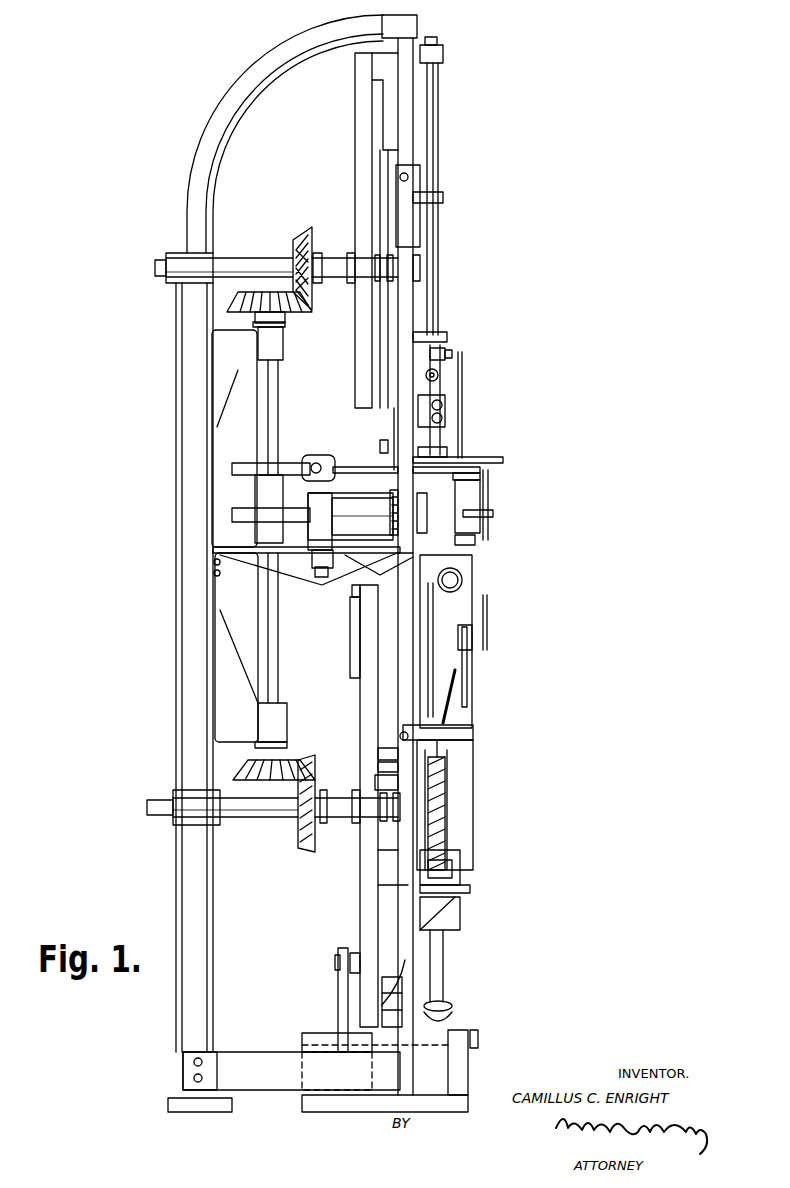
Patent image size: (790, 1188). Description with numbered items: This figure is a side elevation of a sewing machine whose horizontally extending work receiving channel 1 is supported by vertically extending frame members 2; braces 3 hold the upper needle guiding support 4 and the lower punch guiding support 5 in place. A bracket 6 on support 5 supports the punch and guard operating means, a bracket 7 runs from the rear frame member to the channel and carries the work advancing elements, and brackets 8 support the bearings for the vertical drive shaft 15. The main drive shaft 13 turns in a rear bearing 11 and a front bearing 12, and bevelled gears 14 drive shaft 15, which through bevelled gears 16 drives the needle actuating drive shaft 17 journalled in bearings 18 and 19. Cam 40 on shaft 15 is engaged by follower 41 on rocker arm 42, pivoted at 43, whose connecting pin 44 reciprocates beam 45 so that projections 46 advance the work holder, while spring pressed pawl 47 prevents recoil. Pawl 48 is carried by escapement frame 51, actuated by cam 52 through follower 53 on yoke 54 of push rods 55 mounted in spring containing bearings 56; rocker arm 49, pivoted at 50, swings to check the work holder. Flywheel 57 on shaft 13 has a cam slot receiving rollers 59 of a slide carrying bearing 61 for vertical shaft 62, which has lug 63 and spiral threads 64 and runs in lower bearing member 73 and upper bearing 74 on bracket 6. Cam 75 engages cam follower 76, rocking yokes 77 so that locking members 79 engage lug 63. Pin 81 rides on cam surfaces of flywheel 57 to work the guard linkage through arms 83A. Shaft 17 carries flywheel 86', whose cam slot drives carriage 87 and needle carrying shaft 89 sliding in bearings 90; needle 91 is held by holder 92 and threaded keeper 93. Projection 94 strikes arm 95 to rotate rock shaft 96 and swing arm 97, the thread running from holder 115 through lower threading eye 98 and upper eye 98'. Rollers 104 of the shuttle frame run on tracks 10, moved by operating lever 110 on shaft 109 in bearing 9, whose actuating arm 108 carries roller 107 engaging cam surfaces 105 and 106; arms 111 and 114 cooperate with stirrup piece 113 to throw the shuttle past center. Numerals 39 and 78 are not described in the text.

The work receiving channel 1 is at (398, 568).
The vertically extending frame members 2 is at (192, 505).
The braces 3 is at (420, 22).
The upper needle guiding support 4 is at (405, 132).
The punch guiding support 5 is at (405, 886).
The bracket 6 is at (460, 798).
The bracket 7 is at (302, 560).
The brackets 8 is at (236, 372).
The bearing 9 is at (462, 1070).
The tracks 10 is at (476, 570).
The rear bearing 11 is at (192, 808).
The front bearing 12 is at (380, 852).
The main drive shaft 13 is at (162, 800).
The bevelled gears 14 is at (318, 768).
The vertical drive shaft 15 is at (272, 388).
The bevelled gears 16 is at (300, 240).
The needle actuating drive shaft 17 is at (252, 266).
The bearing 18 is at (180, 258).
The bearing 19 is at (415, 250).
The bracket 39 is at (385, 573).
The cam 40 is at (243, 514).
The follower 41 is at (222, 562).
The rocker arm 42 is at (292, 484).
The pivot 43 is at (320, 575).
The connecting pin 44 is at (378, 498).
The reciprocating beam 45 is at (380, 518).
The projections 46 is at (404, 500).
The spring pressed pawl 47 is at (422, 508).
The pawl 48 is at (470, 546).
The rocker arm 49 is at (494, 513).
The pivot 50 is at (483, 498).
The escapement frame 51 is at (487, 480).
The cam 52 is at (243, 466).
The follower 53 is at (318, 462).
The yoke 54 is at (325, 470).
The push rods 55 is at (335, 466).
The bearings 56 is at (462, 446).
The flywheel 57 is at (372, 904).
The rollers 59 is at (407, 985).
The bearing 61 is at (450, 1010).
The vertical shaft 62 is at (440, 975).
The lug 63 is at (465, 878).
The spiral slots or threads 64 is at (448, 846).
The lower bearing member 73 is at (470, 893).
The upper bearing 74 is at (463, 741).
The cam 75 is at (385, 790).
The cam follower 76 is at (385, 770).
The yokes 77 is at (458, 763).
The bracket 78 is at (460, 911).
The locking members 79 is at (450, 821).
The pin 81 is at (390, 752).
The arms 83A is at (395, 718).
The flywheel 86' is at (351, 279).
The carriage 87 is at (445, 50).
The needle carrying shaft 89 is at (438, 86).
The bearings 90 is at (445, 197).
The needle 91 is at (440, 432).
The holder 92 is at (444, 350).
The threaded keeper 93 is at (453, 352).
The projection 94 is at (371, 116).
The arm 95 is at (378, 438).
The rock shaft 96 is at (398, 445).
The arm 97 is at (438, 376).
The lower threading eye 98 is at (486, 400).
The upper eye 98' is at (472, 400).
The rollers 104 is at (470, 602).
The cam surface 105 is at (352, 642).
The cam surface 106 is at (352, 598).
The roller 107 is at (355, 952).
The actuating arm 108 is at (338, 984).
The shaft 109 is at (480, 1040).
The operating lever 110 is at (470, 670).
The downwardly extending arm 111 is at (460, 656).
The stirrup piece 113 is at (482, 585).
The upwardly extending arm 114 is at (488, 622).
The holder 115 is at (495, 460).